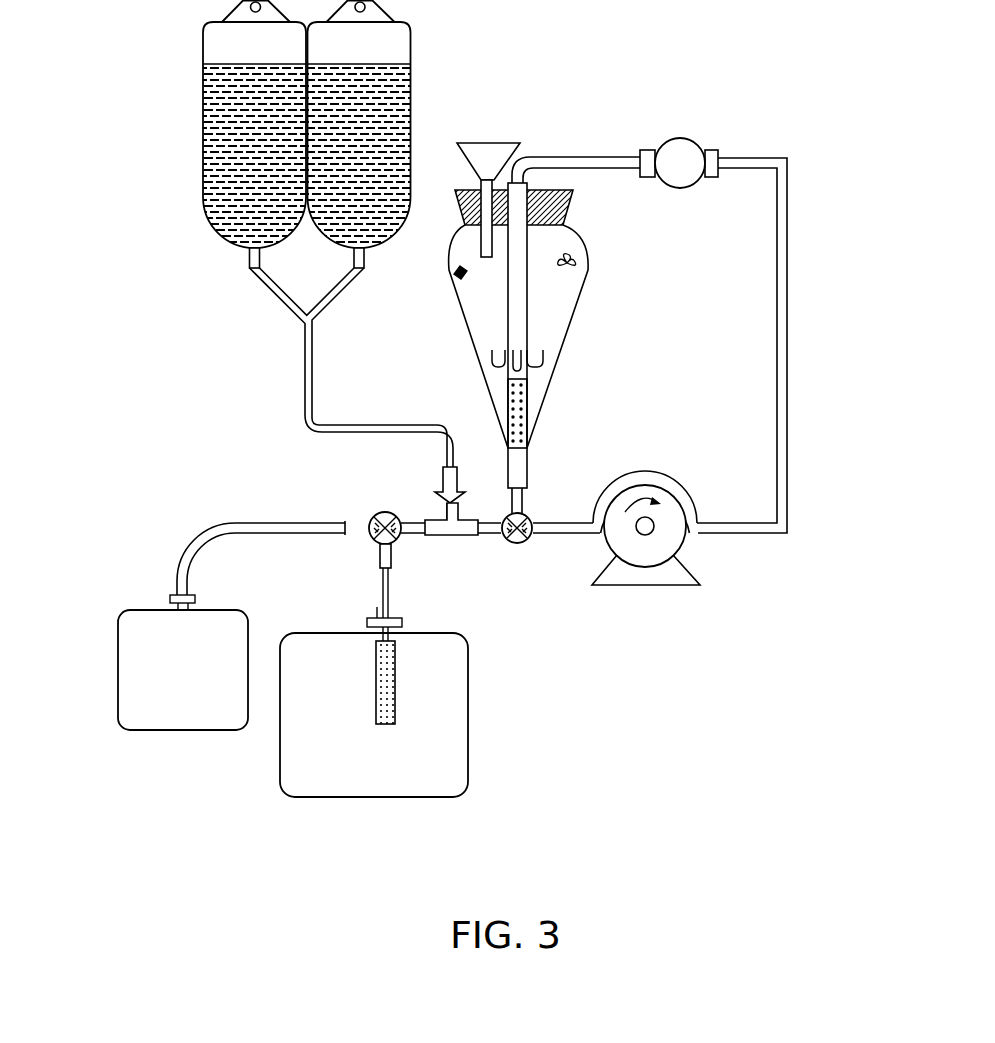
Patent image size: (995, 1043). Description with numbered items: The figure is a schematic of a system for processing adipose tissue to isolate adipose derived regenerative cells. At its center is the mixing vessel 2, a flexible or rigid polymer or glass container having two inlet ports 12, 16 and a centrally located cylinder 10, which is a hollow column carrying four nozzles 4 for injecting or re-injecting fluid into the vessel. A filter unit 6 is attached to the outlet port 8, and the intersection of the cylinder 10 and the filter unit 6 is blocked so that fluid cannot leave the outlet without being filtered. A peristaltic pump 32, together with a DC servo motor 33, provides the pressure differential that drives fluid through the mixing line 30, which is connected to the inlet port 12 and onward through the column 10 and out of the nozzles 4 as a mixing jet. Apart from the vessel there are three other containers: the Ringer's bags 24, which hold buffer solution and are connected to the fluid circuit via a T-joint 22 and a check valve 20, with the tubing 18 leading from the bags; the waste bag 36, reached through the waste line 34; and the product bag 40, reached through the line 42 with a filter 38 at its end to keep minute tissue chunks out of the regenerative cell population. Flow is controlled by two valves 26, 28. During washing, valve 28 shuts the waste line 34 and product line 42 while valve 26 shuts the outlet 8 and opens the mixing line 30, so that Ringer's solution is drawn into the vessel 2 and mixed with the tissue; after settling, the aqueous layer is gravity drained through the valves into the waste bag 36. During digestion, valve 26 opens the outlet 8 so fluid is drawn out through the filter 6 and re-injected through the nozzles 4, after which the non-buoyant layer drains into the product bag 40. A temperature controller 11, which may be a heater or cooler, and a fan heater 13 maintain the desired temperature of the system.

The mixing vessel 2 is at (583, 228).
The nozzles 4 is at (493, 355).
The filter unit 6 is at (527, 425).
The outlet port 8 is at (521, 470).
The centrally located cylinder 10 is at (517, 297).
The temperature controller 11 is at (457, 278).
The inlet port 12 is at (543, 157).
The fan heater 13 is at (575, 262).
The inlet port 16 is at (488, 143).
The supply tubing 18 is at (305, 424).
The check valve 20 is at (440, 478).
The T-joint 22 is at (450, 540).
The Ringer's bags 24 is at (342, 157).
The valve 26 is at (516, 545).
The valve 28 is at (372, 517).
The mixing line 30 is at (782, 158).
The peristaltic pump 32 is at (645, 586).
The DC servo motor 33 is at (680, 138).
The waste line 34 is at (195, 540).
The waste bag 36 is at (118, 668).
The filter 38 is at (382, 693).
The product bag 40 is at (470, 718).
The line 42 is at (383, 592).